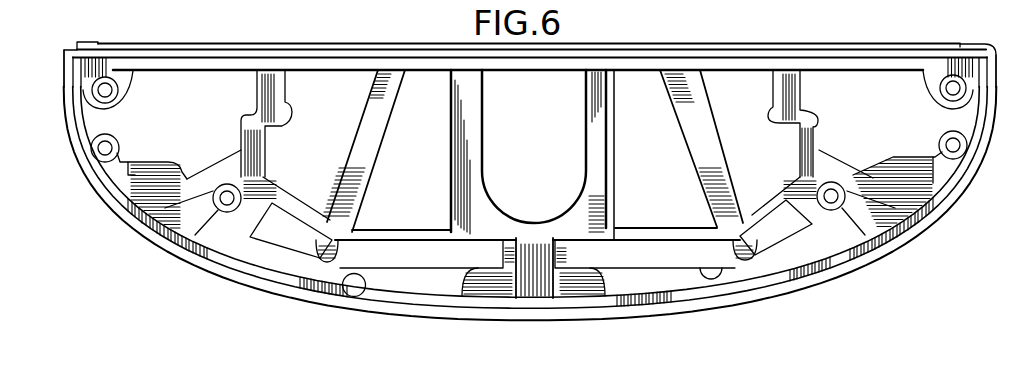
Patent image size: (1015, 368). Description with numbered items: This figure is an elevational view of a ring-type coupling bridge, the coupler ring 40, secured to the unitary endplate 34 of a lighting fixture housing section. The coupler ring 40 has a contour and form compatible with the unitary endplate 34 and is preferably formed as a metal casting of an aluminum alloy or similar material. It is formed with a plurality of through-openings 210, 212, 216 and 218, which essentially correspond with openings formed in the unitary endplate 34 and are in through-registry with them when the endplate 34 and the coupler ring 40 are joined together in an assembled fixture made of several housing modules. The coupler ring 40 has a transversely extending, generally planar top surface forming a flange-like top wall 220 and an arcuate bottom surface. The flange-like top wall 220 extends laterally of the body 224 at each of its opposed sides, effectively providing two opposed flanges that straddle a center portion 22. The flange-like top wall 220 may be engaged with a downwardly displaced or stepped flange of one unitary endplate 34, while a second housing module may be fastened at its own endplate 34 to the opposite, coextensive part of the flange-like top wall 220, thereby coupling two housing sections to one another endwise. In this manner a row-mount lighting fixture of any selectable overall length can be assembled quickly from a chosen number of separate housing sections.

The center portion 22 is at (837, 47).
The unitary endplate 34 is at (262, 250).
The coupler ring 40 is at (160, 248).
The through-opening 210 is at (420, 100).
The through-opening 212 is at (322, 93).
The through-opening 216 is at (167, 95).
The through-opening 218 is at (553, 100).
The flange-like top wall 220 is at (247, 68).
The body 224 is at (447, 190).